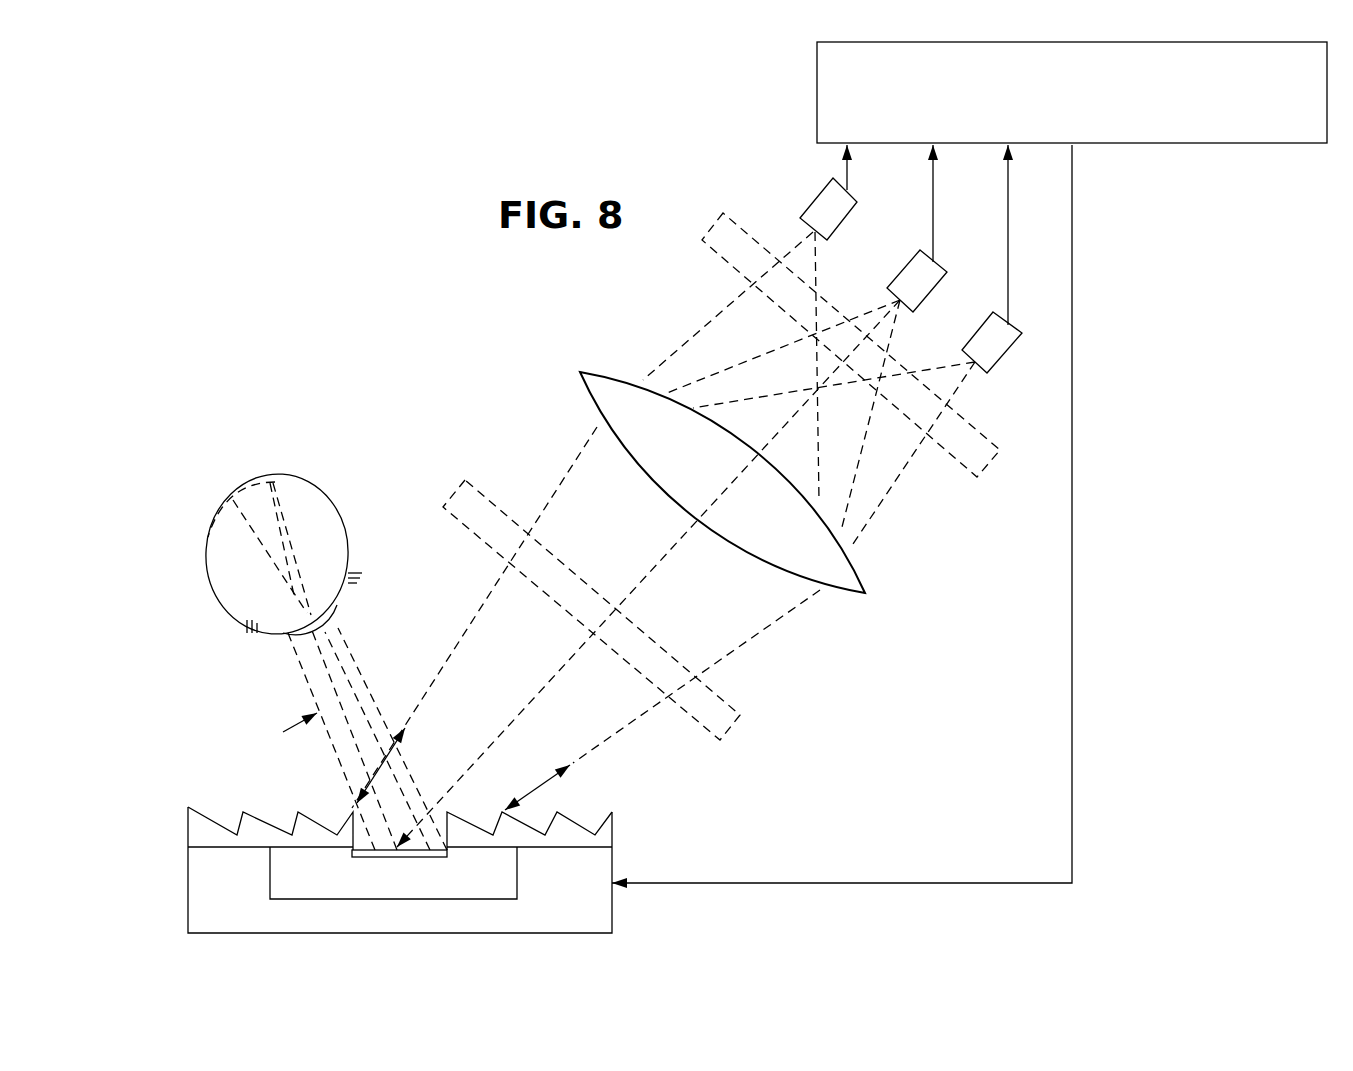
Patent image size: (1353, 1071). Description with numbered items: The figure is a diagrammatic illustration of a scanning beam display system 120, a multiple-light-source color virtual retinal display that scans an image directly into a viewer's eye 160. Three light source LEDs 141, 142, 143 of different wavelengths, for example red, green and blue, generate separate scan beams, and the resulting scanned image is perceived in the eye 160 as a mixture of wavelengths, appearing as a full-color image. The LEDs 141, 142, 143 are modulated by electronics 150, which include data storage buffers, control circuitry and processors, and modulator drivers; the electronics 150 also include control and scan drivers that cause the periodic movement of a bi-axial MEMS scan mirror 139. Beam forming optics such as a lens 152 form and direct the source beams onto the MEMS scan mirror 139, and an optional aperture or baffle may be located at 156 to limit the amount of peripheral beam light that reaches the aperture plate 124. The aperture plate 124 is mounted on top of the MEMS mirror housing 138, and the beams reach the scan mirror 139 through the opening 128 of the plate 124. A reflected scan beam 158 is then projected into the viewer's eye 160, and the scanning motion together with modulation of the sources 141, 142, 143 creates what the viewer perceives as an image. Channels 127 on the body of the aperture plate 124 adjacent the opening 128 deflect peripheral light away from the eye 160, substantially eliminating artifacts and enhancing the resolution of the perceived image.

The scanning beam display system 120 is at (446, 364).
The aperture plate 124 is at (441, 789).
The channels 127 is at (287, 811).
The opening 128 is at (384, 820).
The MEMS mirror housing 138 is at (580, 924).
The bi-axial MEMS scan mirror 139 is at (415, 845).
The light source LED 141 is at (813, 200).
The light source LED 142 is at (896, 283).
The light source LED 143 is at (1003, 362).
The electronics 150 is at (1090, 130).
The lens 152 is at (867, 590).
The aperture or baffle 156 is at (731, 728).
The reflected scan beam 158 is at (407, 667).
The viewer's eye 160 is at (232, 606).